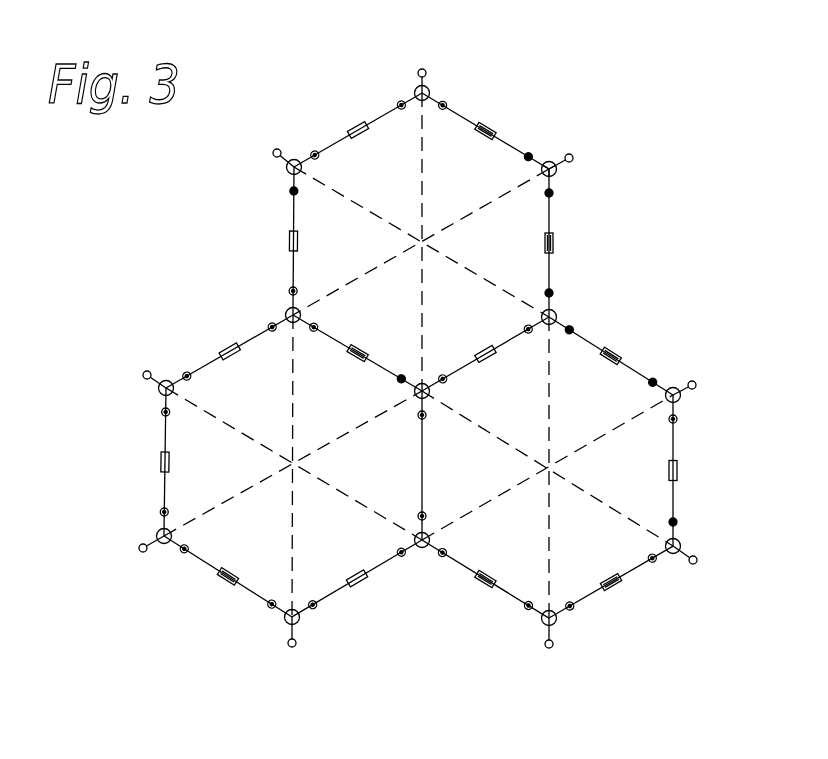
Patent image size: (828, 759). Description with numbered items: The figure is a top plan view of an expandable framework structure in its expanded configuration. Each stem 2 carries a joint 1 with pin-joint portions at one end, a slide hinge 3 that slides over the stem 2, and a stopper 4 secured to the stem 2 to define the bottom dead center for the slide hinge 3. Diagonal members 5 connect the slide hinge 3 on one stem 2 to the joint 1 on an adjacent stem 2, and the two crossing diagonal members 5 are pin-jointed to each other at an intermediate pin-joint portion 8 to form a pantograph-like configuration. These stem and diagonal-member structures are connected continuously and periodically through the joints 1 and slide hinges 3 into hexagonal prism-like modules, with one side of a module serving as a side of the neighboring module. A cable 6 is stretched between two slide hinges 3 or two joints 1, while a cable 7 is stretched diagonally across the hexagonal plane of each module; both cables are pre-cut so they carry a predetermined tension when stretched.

The joint 1 is at (553, 164).
The stem 2 is at (556, 171).
The slide hinge 3 is at (553, 178).
The stopper 4 is at (550, 162).
The diagonal members 5 is at (504, 140).
The cable 6 is at (458, 110).
The cable 7 is at (424, 147).
The intermediate pin-joint portion 8 is at (357, 124).